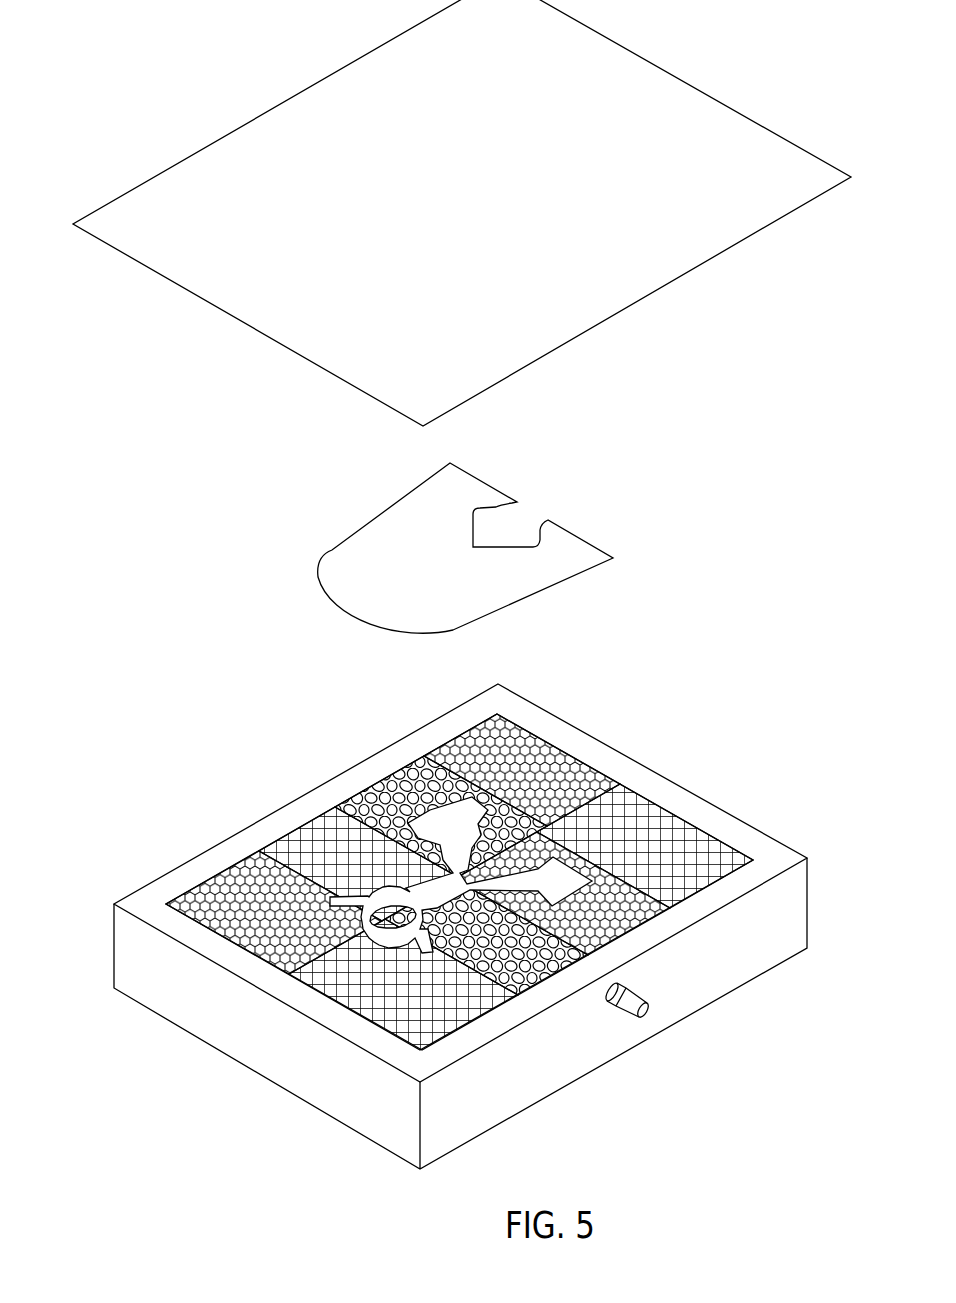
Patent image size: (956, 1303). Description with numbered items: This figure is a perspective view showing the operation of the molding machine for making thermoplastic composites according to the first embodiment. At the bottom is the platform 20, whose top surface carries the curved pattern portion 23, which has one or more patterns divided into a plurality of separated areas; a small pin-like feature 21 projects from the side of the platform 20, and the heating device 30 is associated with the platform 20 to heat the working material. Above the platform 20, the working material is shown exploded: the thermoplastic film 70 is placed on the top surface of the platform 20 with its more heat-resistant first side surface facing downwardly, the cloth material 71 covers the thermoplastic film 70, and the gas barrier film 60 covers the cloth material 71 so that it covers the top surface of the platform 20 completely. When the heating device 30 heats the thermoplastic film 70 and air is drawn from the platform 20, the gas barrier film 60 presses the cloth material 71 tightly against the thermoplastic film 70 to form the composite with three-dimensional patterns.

The platform 20 is at (740, 831).
The positioning pin 21 is at (623, 1005).
The curved pattern portion 23 is at (397, 784).
The heating device 30 is at (113, 975).
The gas barrier film 60 is at (283, 323).
The thermoplastic film 70 is at (360, 898).
The cloth material 71 is at (333, 595).